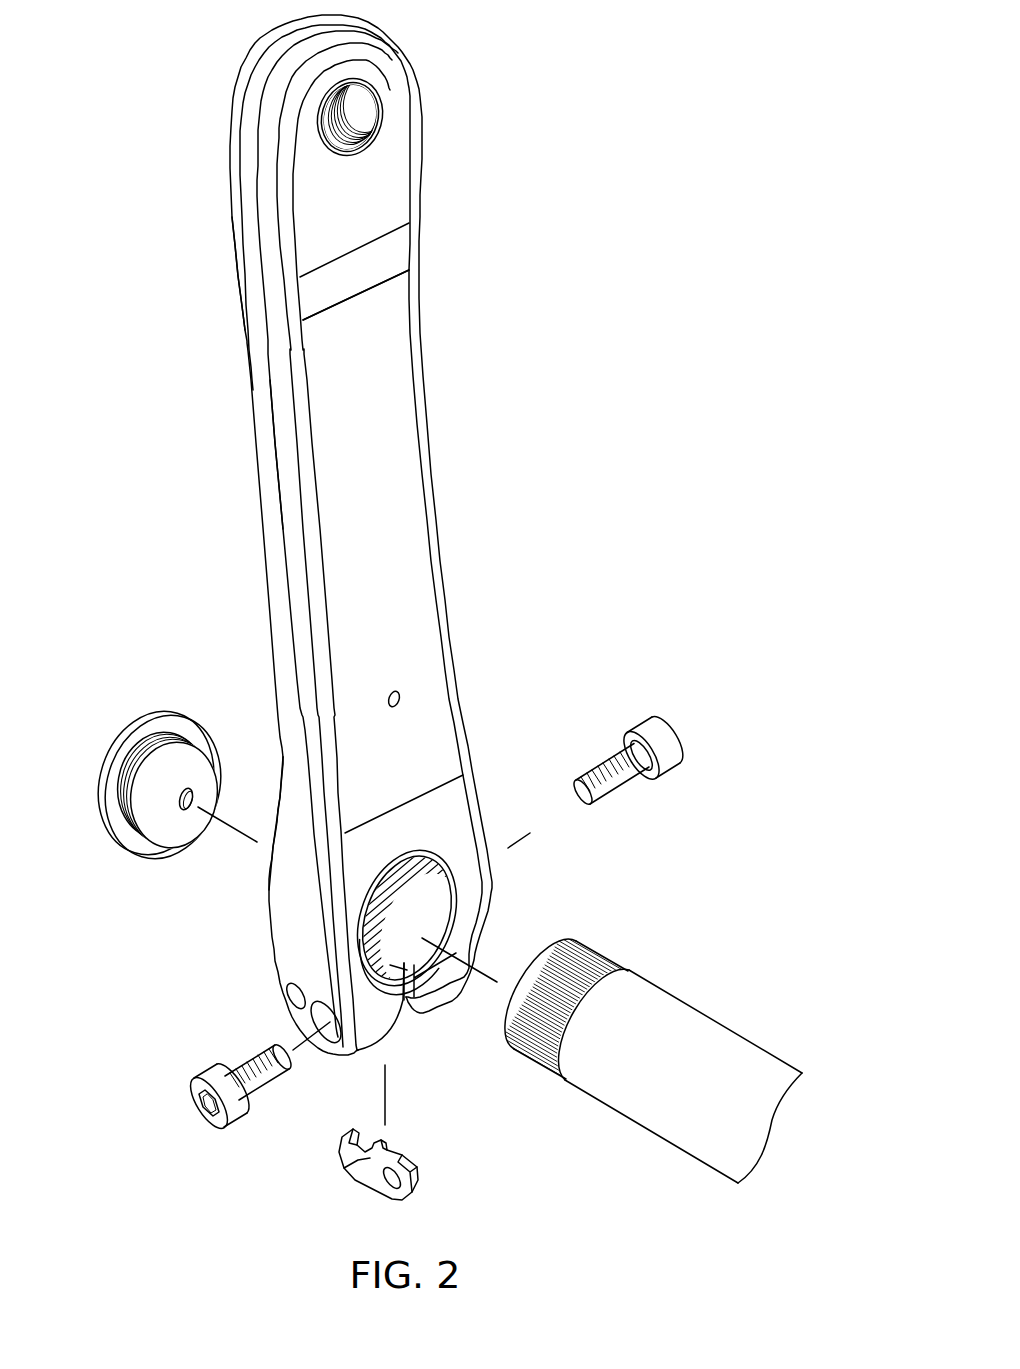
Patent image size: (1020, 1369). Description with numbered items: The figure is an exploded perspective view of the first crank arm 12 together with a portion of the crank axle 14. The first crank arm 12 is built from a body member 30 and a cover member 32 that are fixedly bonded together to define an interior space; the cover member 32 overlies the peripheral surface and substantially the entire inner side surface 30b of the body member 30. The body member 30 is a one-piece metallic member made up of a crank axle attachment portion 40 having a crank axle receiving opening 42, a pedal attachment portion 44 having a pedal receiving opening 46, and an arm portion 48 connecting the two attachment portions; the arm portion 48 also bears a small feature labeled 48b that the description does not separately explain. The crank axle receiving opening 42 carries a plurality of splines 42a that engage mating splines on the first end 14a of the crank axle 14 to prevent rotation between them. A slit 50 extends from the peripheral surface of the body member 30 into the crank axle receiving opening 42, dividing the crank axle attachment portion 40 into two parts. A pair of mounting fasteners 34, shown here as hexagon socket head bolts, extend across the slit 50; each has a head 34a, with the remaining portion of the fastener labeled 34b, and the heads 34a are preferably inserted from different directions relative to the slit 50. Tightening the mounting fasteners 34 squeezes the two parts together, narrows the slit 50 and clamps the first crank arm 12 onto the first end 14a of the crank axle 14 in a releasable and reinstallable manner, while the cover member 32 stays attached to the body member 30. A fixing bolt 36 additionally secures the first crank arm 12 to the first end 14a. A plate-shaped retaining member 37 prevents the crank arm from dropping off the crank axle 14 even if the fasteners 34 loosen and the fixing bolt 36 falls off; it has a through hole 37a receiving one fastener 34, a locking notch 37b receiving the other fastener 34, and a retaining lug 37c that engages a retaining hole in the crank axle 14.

The first crank arm 12 is at (350, 570).
The crank axle 14 is at (649, 1059).
The first end of the crank axle 14a is at (526, 1058).
The body member 30 is at (377, 259).
The inner side surface 30b is at (379, 369).
The cover member 32 is at (243, 303).
The mounting fasteners 34 is at (438, 936).
The heads 34a is at (675, 772).
The bolt shaft 34b is at (614, 795).
The fixing bolt 36 is at (152, 716).
The retaining member 37 is at (383, 1176).
The through hole 37a is at (393, 1182).
The locking notch 37b is at (355, 1148).
The retaining lug 37c is at (386, 1142).
The crank axle attachment portion 40 is at (352, 918).
The crank axle receiving opening 42 is at (358, 1050).
The splines 42a is at (440, 913).
The pedal attachment portion 44 is at (308, 142).
The pedal receiving opening 46 is at (371, 117).
The arm portion 48 is at (362, 460).
The hole 48b is at (400, 692).
The slit 50 is at (409, 1019).